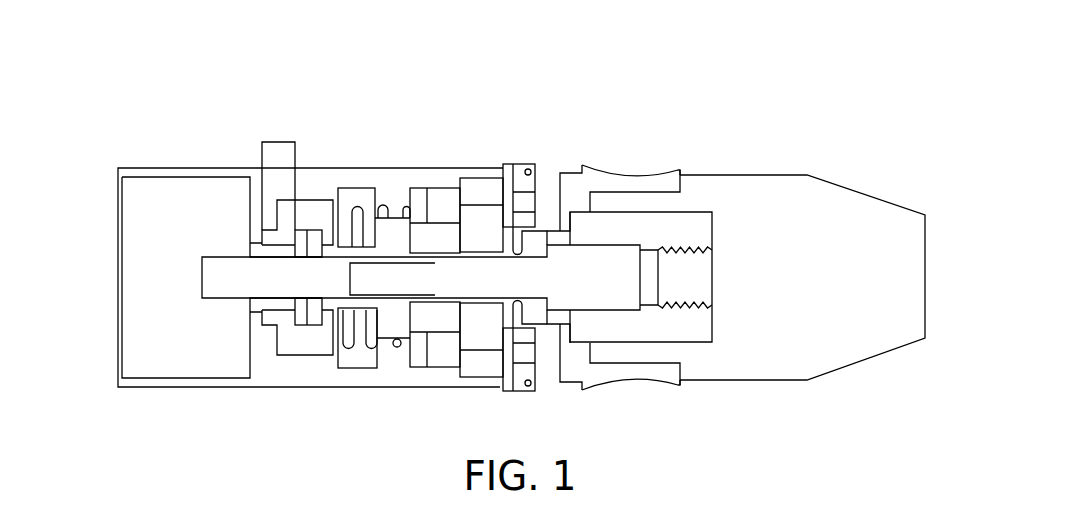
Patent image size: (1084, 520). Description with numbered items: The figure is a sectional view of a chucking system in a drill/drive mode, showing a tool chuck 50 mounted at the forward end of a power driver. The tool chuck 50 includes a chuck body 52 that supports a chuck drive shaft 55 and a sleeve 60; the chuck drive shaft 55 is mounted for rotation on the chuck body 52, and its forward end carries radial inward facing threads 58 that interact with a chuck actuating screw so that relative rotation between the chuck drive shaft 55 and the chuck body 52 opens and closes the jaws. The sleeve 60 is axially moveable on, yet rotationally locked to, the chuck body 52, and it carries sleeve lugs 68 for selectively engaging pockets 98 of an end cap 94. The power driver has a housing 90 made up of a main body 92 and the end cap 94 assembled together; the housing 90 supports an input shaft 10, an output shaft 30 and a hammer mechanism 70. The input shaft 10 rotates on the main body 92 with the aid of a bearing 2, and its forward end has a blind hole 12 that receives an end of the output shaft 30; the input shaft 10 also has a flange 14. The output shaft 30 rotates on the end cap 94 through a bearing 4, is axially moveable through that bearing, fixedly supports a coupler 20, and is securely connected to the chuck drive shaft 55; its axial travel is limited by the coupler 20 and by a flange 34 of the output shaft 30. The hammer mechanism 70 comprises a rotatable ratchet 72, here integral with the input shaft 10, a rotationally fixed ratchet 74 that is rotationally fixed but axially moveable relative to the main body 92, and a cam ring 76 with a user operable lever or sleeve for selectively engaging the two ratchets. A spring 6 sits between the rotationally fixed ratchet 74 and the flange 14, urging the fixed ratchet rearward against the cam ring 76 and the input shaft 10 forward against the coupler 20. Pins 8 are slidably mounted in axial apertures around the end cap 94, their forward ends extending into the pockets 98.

The bearing 2 is at (257, 308).
The bearing 4 is at (490, 205).
The spring 6 is at (367, 360).
The pins 8 is at (443, 198).
The input shaft 10 is at (217, 300).
The blind hole 12 is at (380, 290).
The flange 14 is at (417, 365).
The coupler 20 is at (457, 333).
The output shaft 30 is at (493, 310).
The flange 34 is at (540, 323).
The tool chuck 50 is at (742, 128).
The chuck body 52 is at (868, 193).
The chuck drive shaft 55 is at (712, 323).
The radial inward facing threads 58 is at (698, 300).
The sleeve 60 is at (633, 175).
The sleeve lugs 68 is at (570, 177).
The hammer mechanism 70 is at (399, 112).
The rotatable ratchet 72 is at (397, 213).
The rotationally fixed ratchet 74 is at (307, 197).
The cam ring 76 is at (278, 142).
The housing 90 is at (494, 120).
The main body 92 is at (182, 168).
The end cap 94 is at (513, 170).
The pockets 98 is at (528, 177).